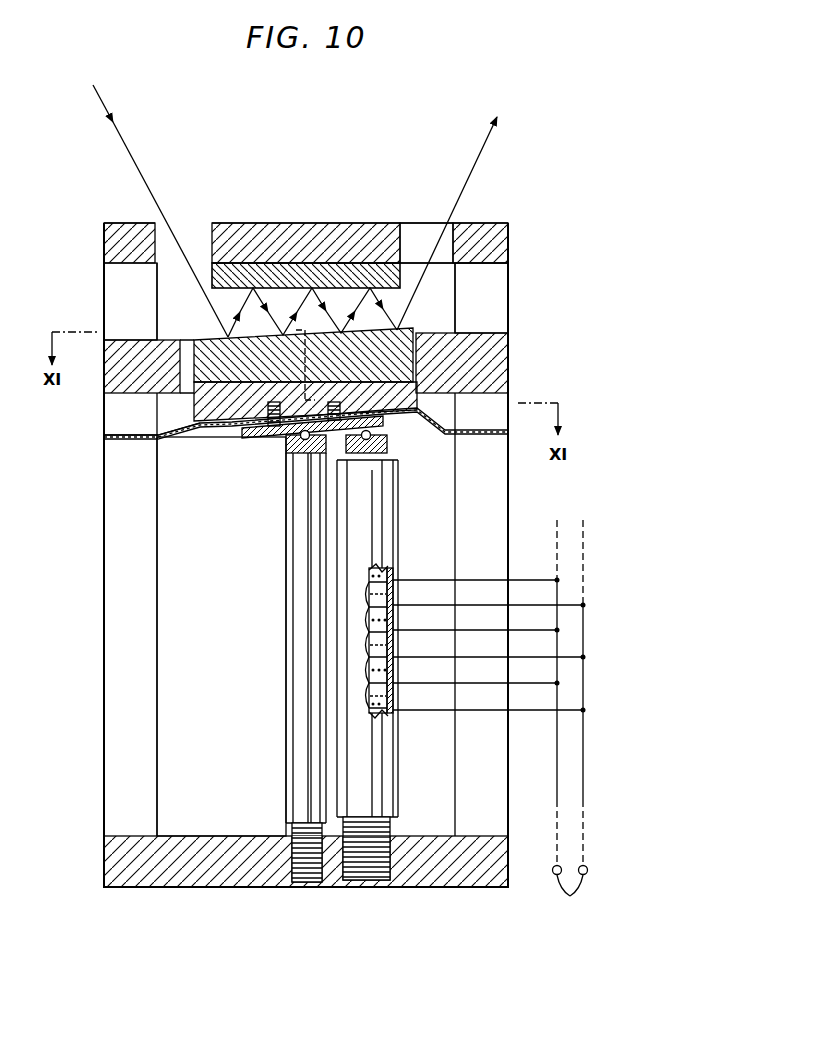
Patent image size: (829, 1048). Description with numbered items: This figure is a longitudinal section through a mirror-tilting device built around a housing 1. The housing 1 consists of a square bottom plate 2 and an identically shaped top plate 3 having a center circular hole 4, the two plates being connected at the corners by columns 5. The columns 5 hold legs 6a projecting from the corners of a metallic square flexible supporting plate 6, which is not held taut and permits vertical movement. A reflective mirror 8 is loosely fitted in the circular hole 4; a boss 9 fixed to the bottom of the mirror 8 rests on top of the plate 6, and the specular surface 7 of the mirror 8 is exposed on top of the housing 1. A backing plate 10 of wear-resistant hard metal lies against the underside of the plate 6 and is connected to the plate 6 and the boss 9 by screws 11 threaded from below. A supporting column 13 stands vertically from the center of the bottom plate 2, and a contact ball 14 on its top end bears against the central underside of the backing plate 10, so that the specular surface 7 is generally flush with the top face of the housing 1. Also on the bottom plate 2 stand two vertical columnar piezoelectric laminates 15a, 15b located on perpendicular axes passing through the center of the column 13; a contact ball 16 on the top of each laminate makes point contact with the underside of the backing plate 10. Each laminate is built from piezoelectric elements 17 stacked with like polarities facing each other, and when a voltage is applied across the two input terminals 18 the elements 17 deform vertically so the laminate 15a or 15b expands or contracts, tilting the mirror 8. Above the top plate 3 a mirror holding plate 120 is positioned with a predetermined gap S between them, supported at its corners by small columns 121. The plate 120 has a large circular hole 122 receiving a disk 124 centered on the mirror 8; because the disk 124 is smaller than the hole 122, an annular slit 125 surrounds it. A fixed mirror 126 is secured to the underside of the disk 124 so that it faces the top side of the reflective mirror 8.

The housing 1 is at (510, 368).
The bottom plate 2 is at (112, 862).
The top plate 3 is at (108, 376).
The circular hole 4 is at (431, 349).
The columns 5 is at (112, 628).
The flexible supporting plate 6 is at (224, 428).
The legs 6a is at (170, 440).
The specular surface 7 is at (207, 335).
The reflective mirror 8 is at (402, 332).
The boss 9 is at (205, 403).
The backing plate 10 is at (258, 437).
The screws 11 is at (275, 428).
The supporting column 13 is at (296, 660).
The contact ball 14 is at (302, 455).
The piezoelectric laminate 15a is at (407, 691).
The piezoelectric laminate 15b is at (398, 790).
The contact ball 16 is at (390, 440).
The piezoelectric elements 17 is at (400, 690).
The input terminals 18 is at (490, 722).
The gap S is at (133, 300).
The mirror holding plate 120 is at (509, 233).
The small columns 121 is at (500, 300).
The circular hole 122 is at (477, 223).
The disk 124 is at (235, 224).
The annular slit 125 is at (420, 222).
The fixed mirror 126 is at (322, 270).